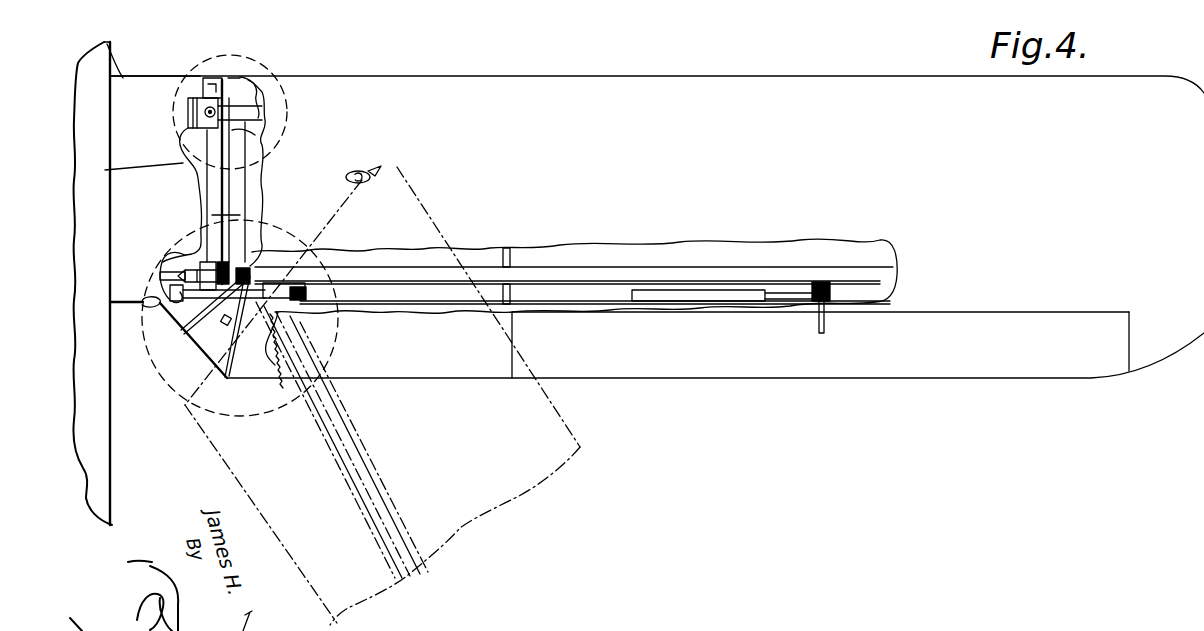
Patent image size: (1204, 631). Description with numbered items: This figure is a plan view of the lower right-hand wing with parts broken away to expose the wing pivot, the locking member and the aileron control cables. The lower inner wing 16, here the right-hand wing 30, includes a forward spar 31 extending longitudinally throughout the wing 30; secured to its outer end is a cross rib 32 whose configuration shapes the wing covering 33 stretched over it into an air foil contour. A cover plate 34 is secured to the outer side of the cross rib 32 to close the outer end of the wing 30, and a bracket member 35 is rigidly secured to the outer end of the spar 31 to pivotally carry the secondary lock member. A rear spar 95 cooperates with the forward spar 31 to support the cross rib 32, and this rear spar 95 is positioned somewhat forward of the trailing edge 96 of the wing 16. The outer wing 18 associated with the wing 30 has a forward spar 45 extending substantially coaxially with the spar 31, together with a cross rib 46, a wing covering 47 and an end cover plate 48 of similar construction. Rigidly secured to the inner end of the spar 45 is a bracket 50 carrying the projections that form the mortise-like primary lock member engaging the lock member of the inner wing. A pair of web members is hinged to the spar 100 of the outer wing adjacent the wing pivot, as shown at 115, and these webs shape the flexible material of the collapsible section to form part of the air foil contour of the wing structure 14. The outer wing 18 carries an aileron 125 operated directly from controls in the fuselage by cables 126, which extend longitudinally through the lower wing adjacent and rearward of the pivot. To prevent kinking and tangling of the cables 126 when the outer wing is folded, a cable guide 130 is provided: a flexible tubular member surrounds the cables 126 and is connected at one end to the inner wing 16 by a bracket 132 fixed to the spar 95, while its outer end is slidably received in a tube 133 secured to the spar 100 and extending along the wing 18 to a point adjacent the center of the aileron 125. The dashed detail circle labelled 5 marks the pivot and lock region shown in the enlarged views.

The detail circle 5 is at (268, 58).
The wing structure 14 is at (183, 402).
The lower inner wing 16 is at (151, 78).
The outer wing 18 is at (703, 76).
The right-hand wing 30 is at (96, 274).
The forward spar 31 is at (187, 113).
The cross rib 32 is at (210, 198).
The wing covering 33 is at (128, 174).
The cover plate 34 is at (247, 183).
The bracket member 35 is at (214, 62).
The forward spar 45 is at (263, 98).
The cross rib 46 is at (233, 153).
The wing covering 47 is at (393, 149).
The end cover plate 48 is at (227, 215).
The bracket 50 is at (237, 110).
The rear spar 95 is at (164, 267).
The trailing edge 96 is at (134, 306).
The spar 100 is at (370, 278).
The hinge 115 is at (284, 262).
The aileron 125 is at (1000, 322).
The cables 126 is at (778, 290).
The cable guide 130 is at (305, 268).
The bracket 132 is at (160, 287).
The tube 133 is at (381, 296).